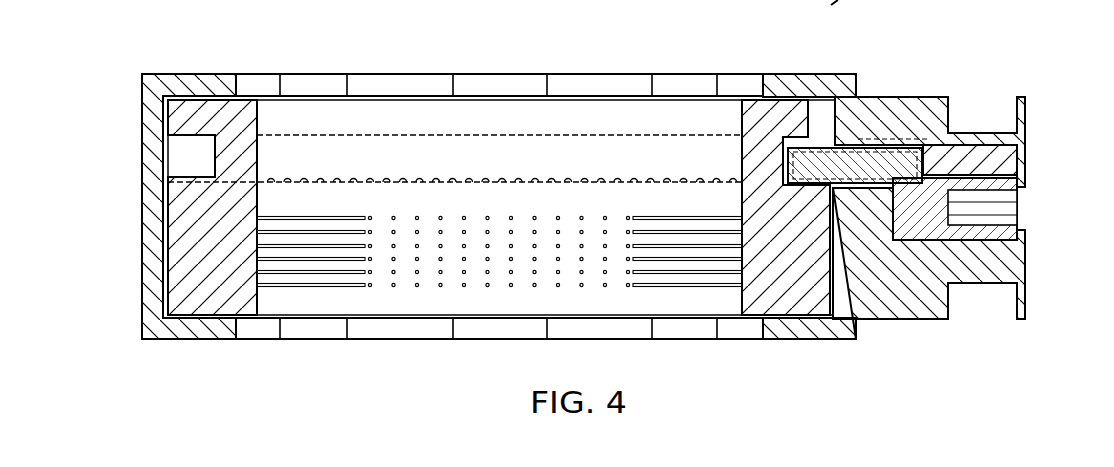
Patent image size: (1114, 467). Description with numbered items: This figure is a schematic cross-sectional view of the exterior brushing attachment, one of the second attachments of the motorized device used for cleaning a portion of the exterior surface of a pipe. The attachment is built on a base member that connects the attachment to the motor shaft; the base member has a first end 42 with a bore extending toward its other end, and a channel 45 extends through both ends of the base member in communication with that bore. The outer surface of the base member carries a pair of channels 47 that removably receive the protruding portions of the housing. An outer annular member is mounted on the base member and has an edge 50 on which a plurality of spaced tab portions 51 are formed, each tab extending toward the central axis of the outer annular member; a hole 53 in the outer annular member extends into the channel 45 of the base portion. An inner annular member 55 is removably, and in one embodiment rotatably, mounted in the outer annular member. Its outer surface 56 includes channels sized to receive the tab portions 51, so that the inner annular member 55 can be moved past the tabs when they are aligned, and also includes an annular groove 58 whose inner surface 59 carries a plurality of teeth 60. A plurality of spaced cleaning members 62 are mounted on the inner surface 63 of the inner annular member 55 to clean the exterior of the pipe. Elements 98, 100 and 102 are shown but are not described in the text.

The first end 42 is at (843, 18).
The channel 45 is at (915, 138).
The channels 47 is at (995, 117).
The edge 50 is at (376, 338).
The tab portions 51 is at (485, 333).
The hole 53 is at (838, 140).
The inner annular member 55 is at (640, 7).
The outer surface 56 is at (170, 267).
The annular groove 58 is at (178, 150).
The inner surface 59 is at (192, 175).
The teeth 60 is at (322, 177).
The cleaning members 62 is at (413, 287).
The inner surface 63 is at (257, 283).
The retainer 98 is at (972, 157).
The cable 100 is at (898, 7).
The fitting 102 is at (785, 7).